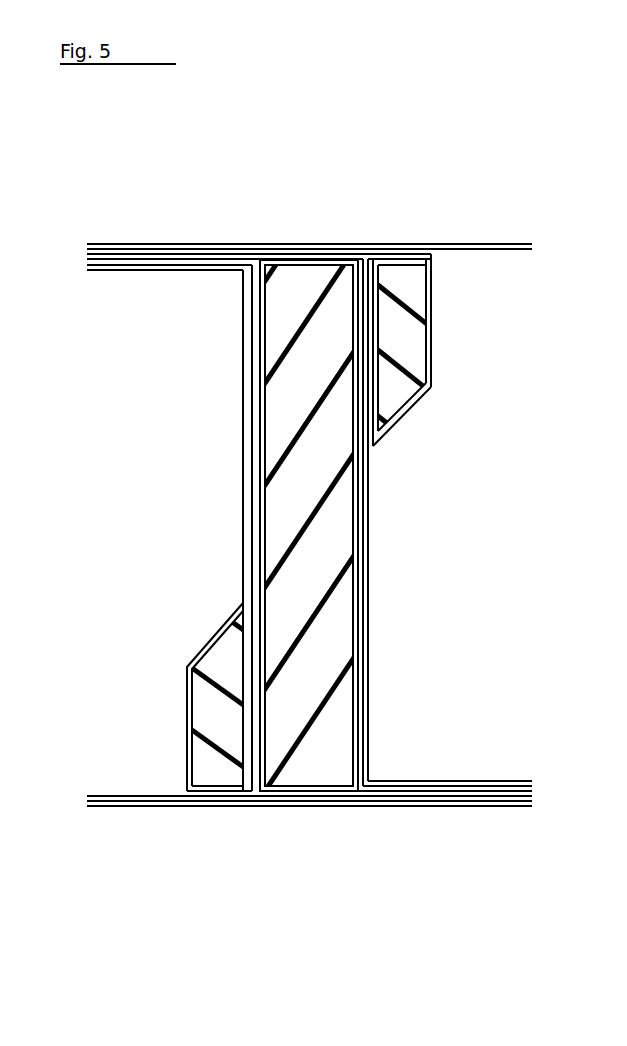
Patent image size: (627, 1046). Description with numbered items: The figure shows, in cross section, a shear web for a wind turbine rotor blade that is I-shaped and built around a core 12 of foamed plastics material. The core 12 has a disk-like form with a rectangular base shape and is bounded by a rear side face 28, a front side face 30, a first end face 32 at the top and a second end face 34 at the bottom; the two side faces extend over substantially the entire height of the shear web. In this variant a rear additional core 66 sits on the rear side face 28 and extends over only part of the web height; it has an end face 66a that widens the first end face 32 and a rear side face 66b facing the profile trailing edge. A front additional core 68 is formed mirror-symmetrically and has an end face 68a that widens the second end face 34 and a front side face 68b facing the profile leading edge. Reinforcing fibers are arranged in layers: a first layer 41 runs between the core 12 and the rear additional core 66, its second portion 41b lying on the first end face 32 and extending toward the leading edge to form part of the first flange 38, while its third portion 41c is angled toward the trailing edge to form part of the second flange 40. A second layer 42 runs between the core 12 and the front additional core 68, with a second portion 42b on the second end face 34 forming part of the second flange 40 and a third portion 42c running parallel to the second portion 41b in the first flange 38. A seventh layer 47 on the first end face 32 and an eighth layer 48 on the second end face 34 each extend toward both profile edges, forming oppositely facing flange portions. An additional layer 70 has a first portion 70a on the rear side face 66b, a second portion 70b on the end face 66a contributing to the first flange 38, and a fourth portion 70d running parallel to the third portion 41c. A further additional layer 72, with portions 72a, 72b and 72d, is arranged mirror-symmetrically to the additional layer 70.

The core 12 is at (337, 600).
The rear side face 28 is at (360, 536).
The front side face 30 is at (258, 545).
The first end face 32 is at (283, 242).
The second end face 34 is at (333, 797).
The first flange 38 is at (126, 235).
The second flange 40 is at (516, 816).
The first layer 41 is at (374, 487).
The second portion of the first layer 41b is at (165, 243).
The third portion of the first layer 41c is at (418, 779).
The second layer 42 is at (250, 472).
The second portion of the second layer 42b is at (405, 797).
The third portion of the second layer 42c is at (110, 272).
The seventh layer 47 is at (482, 243).
The eighth layer 48 is at (489, 801).
The rear additional core 66 is at (405, 346).
The end face of the rear additional core 66a is at (415, 256).
The rear side face of the rear additional core 66b is at (436, 386).
The front additional core 68 is at (213, 713).
The end face of the front additional core 68a is at (217, 797).
The front side face of the front additional core 68b is at (186, 754).
The additional layer 70 is at (371, 668).
The first portion of the additional layer 70a is at (433, 303).
The second portion of the additional layer 70b is at (345, 253).
The fourth portion of the additional layer 70d is at (488, 779).
The further additional layer 72 is at (242, 395).
The first portion of the further additional layer 72a is at (185, 661).
The second portion of the further additional layer 72b is at (272, 797).
The fourth portion of the further additional layer 72d is at (198, 273).